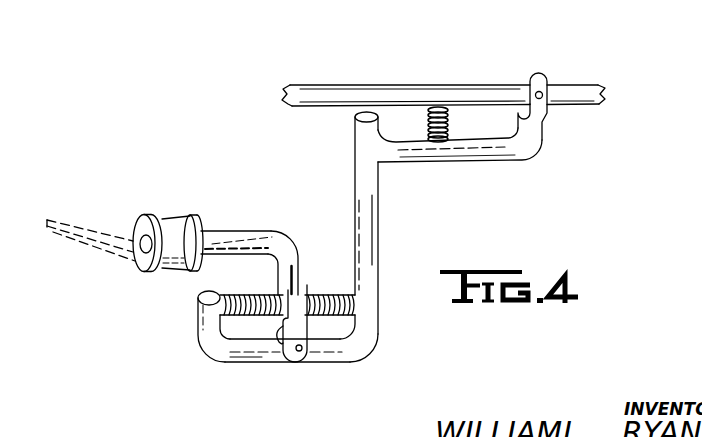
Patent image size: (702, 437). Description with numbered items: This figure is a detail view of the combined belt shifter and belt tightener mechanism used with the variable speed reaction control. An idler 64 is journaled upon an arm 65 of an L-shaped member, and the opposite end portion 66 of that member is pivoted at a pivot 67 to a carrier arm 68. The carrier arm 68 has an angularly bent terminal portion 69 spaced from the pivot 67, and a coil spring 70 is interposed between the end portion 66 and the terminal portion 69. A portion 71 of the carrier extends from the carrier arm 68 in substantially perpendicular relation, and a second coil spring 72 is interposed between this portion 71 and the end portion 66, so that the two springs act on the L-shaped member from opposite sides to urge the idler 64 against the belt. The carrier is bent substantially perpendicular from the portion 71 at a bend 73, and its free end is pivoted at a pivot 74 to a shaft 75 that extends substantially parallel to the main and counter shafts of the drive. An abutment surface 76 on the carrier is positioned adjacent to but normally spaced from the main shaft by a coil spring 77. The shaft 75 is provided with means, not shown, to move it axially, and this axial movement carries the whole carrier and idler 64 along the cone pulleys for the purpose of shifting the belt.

The idler 64 is at (173, 226).
The arm 65 is at (222, 232).
The opposite end portion 66 is at (285, 268).
The pivot 67 is at (306, 360).
The carrier arm 68 is at (260, 352).
The angularly bent terminal portion 69 is at (200, 322).
The coil spring 70 is at (260, 297).
The portion of the carrier 71 is at (367, 233).
The coil spring 72 is at (324, 288).
The bend of the carrier 73 is at (419, 150).
The pivot 74 is at (551, 100).
The shaft 75 is at (485, 94).
The abutment surface 76 is at (361, 117).
The coil spring 77 is at (448, 124).